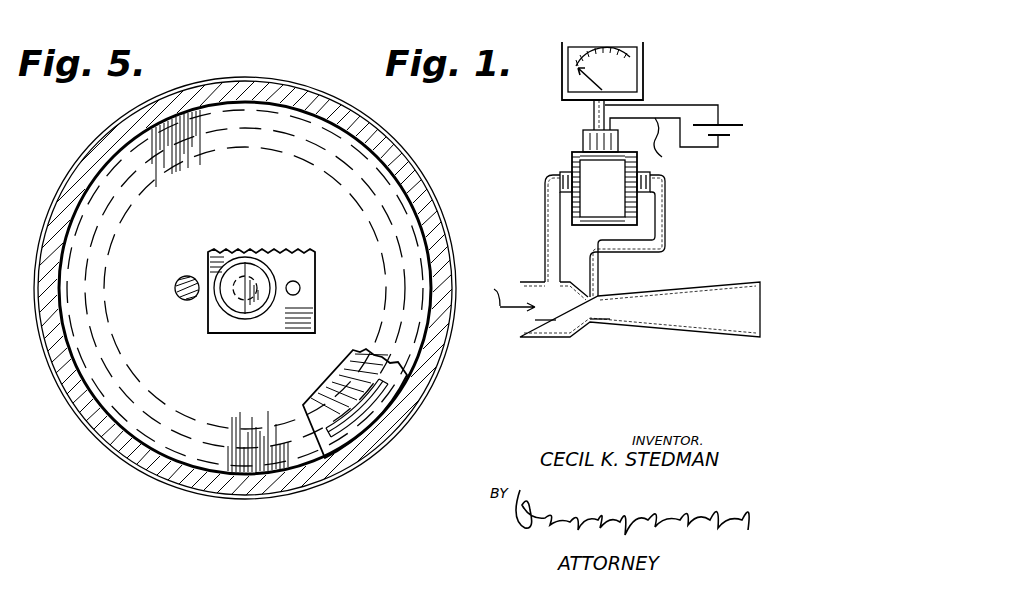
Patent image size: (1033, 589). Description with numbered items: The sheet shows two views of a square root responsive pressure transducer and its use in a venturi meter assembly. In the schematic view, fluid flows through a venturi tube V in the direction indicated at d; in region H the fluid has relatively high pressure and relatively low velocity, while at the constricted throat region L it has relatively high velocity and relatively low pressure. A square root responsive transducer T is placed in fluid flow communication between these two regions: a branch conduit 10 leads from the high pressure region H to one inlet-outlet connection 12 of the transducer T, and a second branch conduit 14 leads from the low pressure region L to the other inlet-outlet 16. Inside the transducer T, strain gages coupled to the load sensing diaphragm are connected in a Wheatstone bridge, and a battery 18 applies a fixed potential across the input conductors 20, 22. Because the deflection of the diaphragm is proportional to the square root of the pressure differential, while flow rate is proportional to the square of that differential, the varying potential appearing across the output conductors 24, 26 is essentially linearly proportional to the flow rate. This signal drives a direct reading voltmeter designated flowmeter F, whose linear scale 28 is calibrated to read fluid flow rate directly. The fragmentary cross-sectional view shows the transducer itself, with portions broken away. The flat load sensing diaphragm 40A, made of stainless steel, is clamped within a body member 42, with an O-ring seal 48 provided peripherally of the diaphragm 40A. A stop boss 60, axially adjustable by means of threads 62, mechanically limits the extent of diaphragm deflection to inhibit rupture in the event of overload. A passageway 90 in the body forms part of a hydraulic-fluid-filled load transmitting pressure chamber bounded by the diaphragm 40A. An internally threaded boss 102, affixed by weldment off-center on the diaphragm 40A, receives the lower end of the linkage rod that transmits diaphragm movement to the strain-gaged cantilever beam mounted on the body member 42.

In FIG. 1, the venturi tube V is at (690, 276).
In FIG. 1, the high pressure region H is at (545, 310).
In FIG. 1, the constricted throat region L is at (600, 310).
In FIG. 1, the direction of fluid flow d is at (510, 290).
In FIG. 1, the branch conduit 10 is at (545, 220).
In FIG. 1, the second branch conduit 14 is at (665, 220).
In FIG. 1, the square root responsive transducer T is at (547, 169).
In FIG. 1, the inlet-outlet connection 12 is at (552, 178).
In FIG. 1, the inlet-outlet 16 is at (645, 173).
In FIG. 1, the output conductor 24 is at (593, 106).
In FIG. 1, the output conductor 26 is at (590, 121).
In FIG. 1, the flowmeter F is at (640, 44).
In FIG. 1, the linear scale 28 is at (604, 68).
In FIG. 1, the input conductor 20 is at (650, 105).
In FIG. 1, the battery 18 is at (722, 122).
In FIG. 1, the input conductor 22 is at (673, 146).
In FIG. 5, the body member 42 is at (433, 363).
In FIG. 5, the load sensing diaphragm 40A is at (372, 246).
In FIG. 5, the stop boss 60 is at (258, 259).
In FIG. 5, the threads 62 is at (272, 268).
In FIG. 5, the passageway 90 is at (300, 289).
In FIG. 5, the internally threaded boss 102 is at (184, 300).
In FIG. 5, the O-ring seal 48 is at (387, 395).